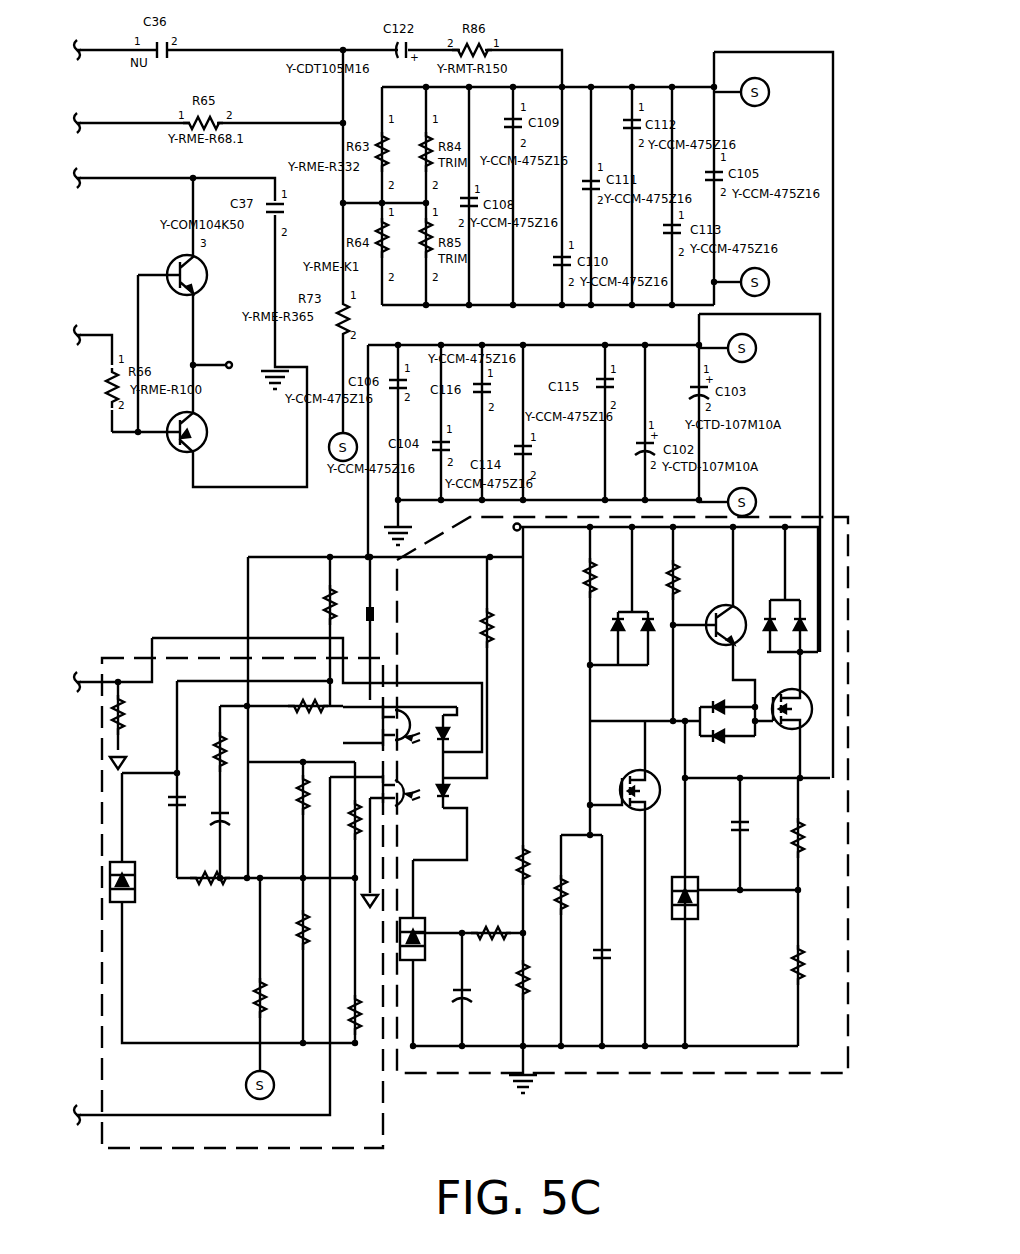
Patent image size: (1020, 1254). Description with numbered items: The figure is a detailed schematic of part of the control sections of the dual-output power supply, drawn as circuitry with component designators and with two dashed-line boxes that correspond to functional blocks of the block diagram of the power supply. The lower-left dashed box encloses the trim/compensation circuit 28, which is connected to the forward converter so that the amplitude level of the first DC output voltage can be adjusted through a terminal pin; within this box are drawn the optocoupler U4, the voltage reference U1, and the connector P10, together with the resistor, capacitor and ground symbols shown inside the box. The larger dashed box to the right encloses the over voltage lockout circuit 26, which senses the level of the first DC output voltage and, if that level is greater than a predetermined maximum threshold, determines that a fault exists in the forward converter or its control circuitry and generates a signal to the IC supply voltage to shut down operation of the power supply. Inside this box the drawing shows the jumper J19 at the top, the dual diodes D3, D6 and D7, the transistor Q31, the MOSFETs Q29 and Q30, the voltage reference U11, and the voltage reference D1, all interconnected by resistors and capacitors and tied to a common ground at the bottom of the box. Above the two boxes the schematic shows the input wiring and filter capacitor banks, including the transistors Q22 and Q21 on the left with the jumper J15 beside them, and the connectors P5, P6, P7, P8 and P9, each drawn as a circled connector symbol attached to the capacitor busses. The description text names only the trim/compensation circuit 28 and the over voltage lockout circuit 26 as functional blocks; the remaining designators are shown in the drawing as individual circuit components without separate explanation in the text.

The trim/compensation circuit 28 is at (128, 668).
The over voltage lockout (OVL) circuit 26 is at (740, 1073).
The transistor Q22 is at (144, 271).
The transistor Q21 is at (198, 373).
The jumper J15 is at (225, 367).
The jumper J19 is at (509, 532).
The connector P5 is at (741, 84).
The connector P6 is at (741, 274).
The connector P7 is at (343, 441).
The connector P8 is at (727, 339).
The connector P9 is at (738, 501).
The connector P10 is at (241, 1077).
The dual diode D3 is at (598, 631).
The dual diode D6 is at (781, 612).
The dual diode D7 is at (681, 719).
The voltage reference D1 is at (373, 940).
The transistor Q31 is at (704, 664).
The MOSFET Q29 is at (761, 715).
The MOSFET Q30 is at (594, 883).
The optocoupler U4 is at (415, 771).
The voltage reference U11 is at (727, 895).
The voltage reference U1 is at (101, 883).